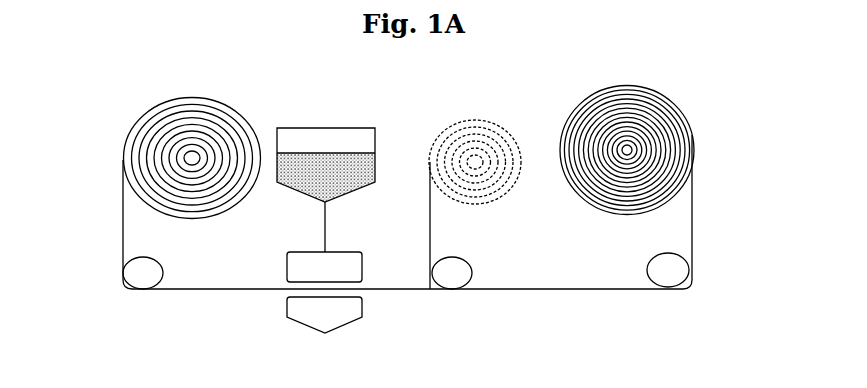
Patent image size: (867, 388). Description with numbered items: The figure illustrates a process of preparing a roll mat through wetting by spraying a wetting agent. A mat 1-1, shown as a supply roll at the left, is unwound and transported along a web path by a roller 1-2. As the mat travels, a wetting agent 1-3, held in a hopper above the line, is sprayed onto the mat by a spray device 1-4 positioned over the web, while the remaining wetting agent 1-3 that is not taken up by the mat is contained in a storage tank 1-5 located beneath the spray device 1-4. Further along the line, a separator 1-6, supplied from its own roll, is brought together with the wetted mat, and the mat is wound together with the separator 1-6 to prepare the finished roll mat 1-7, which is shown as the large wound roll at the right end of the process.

The mat 1-1 is at (137, 135).
The roller 1-2 is at (143, 277).
The wetting agent 1-3 is at (317, 165).
The spray device 1-4 is at (298, 268).
The storage tank 1-5 is at (345, 314).
The separator 1-6 is at (482, 138).
The roll mat 1-7 is at (683, 118).